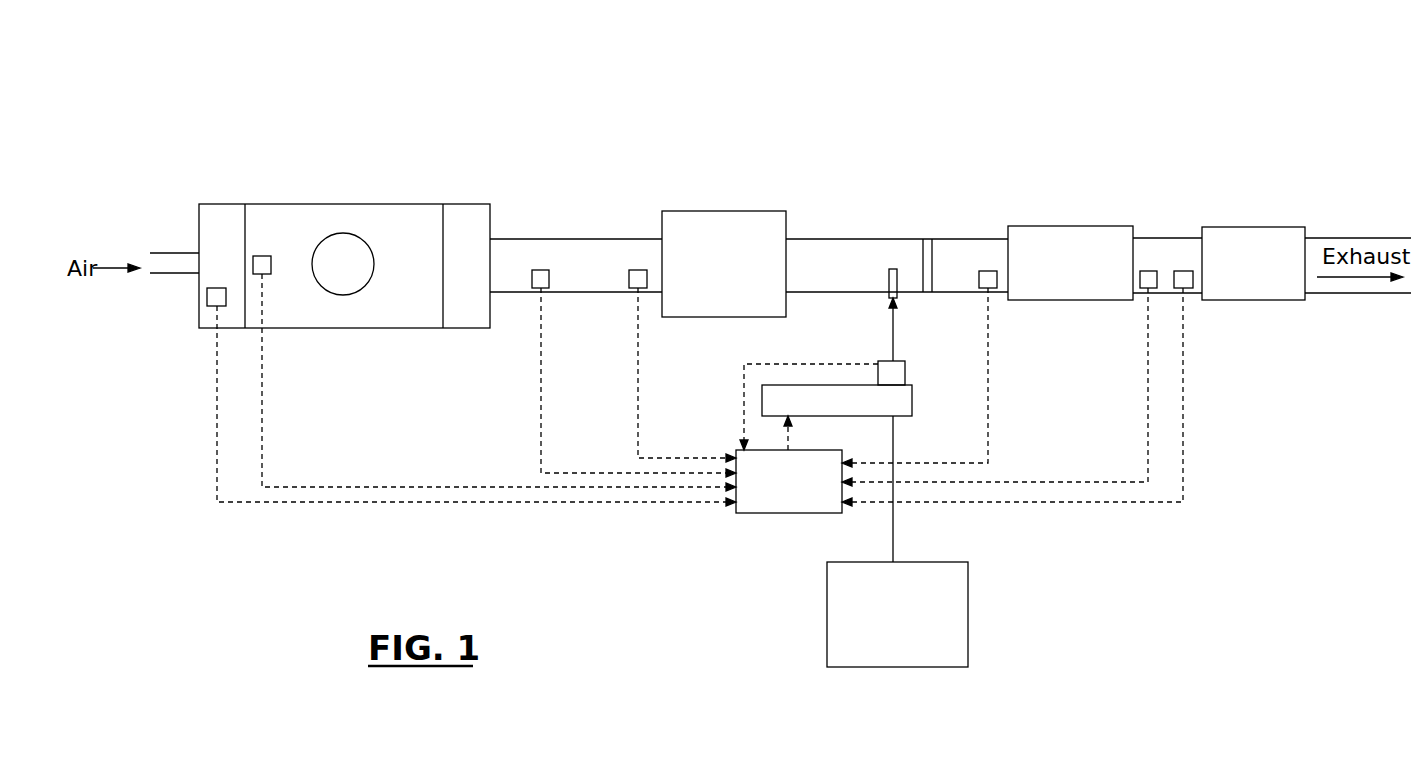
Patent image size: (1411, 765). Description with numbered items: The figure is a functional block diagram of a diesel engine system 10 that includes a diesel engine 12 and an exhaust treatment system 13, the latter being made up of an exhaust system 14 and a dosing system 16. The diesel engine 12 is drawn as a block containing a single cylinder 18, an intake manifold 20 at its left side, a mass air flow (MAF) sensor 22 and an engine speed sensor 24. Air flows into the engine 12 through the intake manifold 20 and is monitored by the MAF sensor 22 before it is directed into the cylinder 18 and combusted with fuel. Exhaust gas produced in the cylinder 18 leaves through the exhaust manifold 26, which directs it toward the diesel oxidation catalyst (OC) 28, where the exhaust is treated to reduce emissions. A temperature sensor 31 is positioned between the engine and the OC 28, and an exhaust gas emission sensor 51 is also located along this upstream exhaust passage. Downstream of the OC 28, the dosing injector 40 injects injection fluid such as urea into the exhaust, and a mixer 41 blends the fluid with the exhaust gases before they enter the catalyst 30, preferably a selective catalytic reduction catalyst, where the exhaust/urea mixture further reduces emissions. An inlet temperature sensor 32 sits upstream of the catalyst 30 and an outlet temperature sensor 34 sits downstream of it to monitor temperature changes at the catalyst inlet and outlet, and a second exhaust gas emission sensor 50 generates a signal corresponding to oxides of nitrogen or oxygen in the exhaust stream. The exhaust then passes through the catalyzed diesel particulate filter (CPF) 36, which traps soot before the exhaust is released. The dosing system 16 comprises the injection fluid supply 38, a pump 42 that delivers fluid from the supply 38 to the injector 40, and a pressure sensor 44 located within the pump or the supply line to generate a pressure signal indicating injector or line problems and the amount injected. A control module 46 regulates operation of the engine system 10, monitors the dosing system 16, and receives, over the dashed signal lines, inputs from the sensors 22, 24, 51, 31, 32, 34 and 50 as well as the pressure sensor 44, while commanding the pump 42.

The diesel engine system 10 is at (530, 68).
The diesel engine 12 is at (293, 203).
The exhaust treatment system 13 is at (1140, 82).
The exhaust system 14 is at (1230, 392).
The dosing system 16 is at (1056, 597).
The cylinder 18 is at (343, 233).
The intake manifold 20 is at (151, 242).
The mass air flow (MAF) sensor 22 is at (207, 297).
The engine speed sensor 24 is at (262, 256).
The exhaust manifold 26 is at (463, 203).
The diesel oxidation catalyst (OC) 28 is at (725, 211).
The catalyst 30 is at (1070, 226).
The temperature sensor 31 is at (629, 280).
The inlet temperature sensor 32 is at (988, 271).
The outlet temperature sensor 34 is at (1148, 271).
The catalyzed diesel particulate filter (CPF) 36 is at (1260, 227).
The injection fluid supply 38 is at (947, 562).
The dosing injector 40 is at (891, 268).
The mixer 41 is at (929, 238).
The pump 42 is at (912, 400).
The pressure sensor 44 is at (900, 361).
The control module 46 is at (770, 513).
The exhaust gas emission sensor 50 is at (1183, 271).
The exhaust gas emission sensor 51 is at (532, 280).